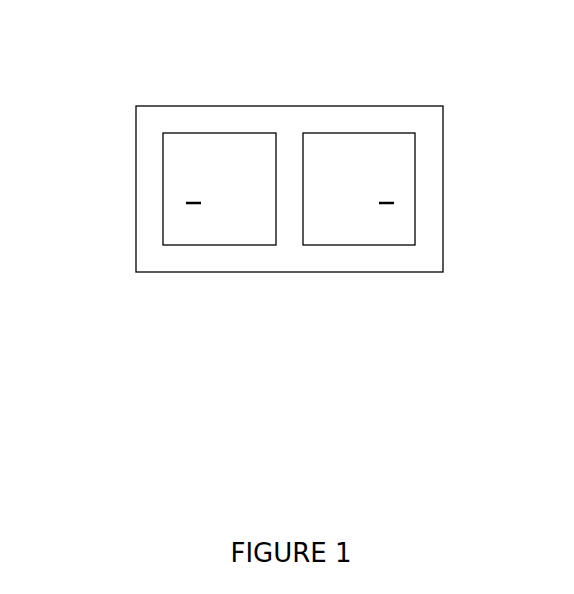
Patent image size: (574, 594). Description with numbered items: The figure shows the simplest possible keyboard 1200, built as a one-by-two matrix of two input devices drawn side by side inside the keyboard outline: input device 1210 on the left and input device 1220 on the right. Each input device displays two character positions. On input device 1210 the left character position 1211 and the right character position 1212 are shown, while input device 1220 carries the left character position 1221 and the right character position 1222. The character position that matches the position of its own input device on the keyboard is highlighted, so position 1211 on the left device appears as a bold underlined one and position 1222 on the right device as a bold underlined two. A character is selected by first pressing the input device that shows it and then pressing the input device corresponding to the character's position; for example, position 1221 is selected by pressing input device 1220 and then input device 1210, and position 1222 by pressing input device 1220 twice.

The keyboard 1200 is at (135, 105).
The input device 1210 is at (262, 132).
The input device 1220 is at (386, 132).
The character position 1211 is at (192, 212).
The character position 1212 is at (247, 203).
The character position 1221 is at (332, 203).
The character position 1222 is at (388, 212).